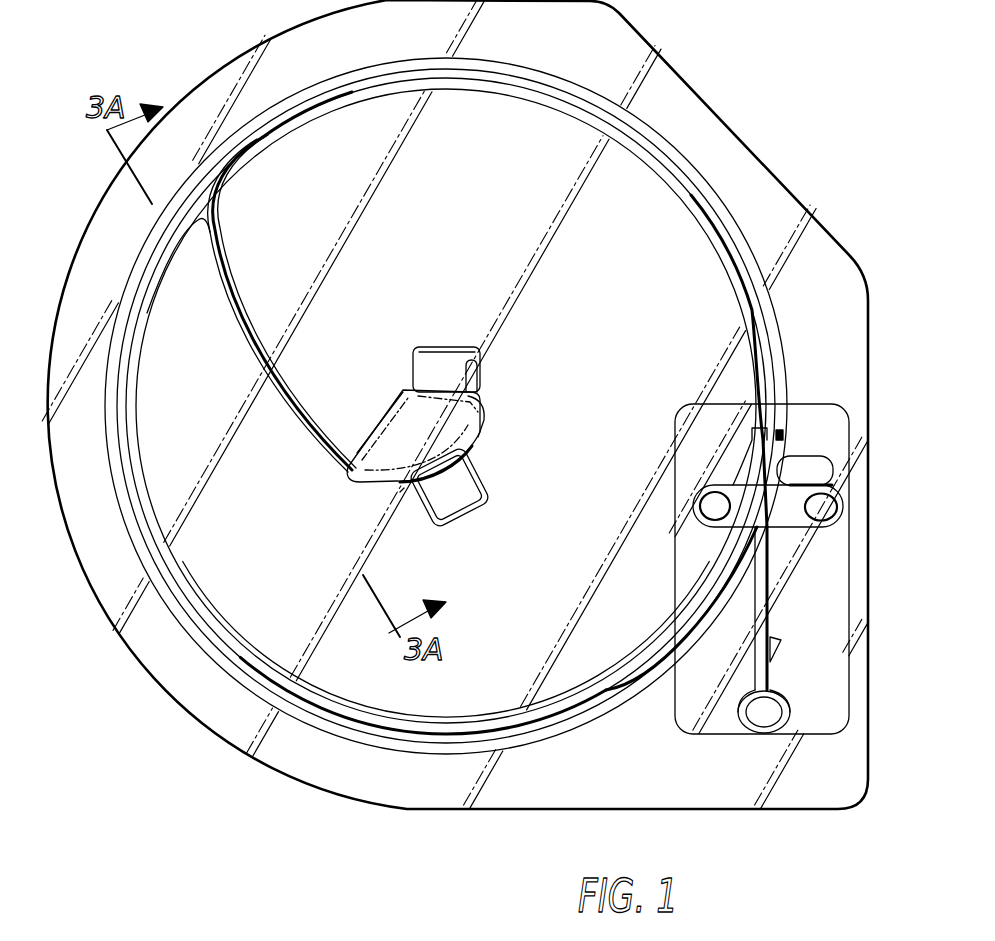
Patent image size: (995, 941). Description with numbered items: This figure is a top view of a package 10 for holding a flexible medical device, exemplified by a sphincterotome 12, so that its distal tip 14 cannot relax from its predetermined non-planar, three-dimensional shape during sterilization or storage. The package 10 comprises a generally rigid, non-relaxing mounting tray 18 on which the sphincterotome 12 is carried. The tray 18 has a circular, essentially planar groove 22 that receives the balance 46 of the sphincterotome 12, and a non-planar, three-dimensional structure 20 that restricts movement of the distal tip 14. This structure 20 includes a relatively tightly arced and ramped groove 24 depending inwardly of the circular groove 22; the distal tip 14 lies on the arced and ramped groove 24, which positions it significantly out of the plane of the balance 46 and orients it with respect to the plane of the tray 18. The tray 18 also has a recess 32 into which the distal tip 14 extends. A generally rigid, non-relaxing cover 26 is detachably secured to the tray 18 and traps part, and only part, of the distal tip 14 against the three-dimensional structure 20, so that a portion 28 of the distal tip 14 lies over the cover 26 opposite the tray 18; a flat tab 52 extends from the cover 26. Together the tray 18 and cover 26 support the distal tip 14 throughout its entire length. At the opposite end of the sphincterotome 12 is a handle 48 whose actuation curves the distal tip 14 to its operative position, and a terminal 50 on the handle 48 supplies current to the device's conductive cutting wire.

The package 10 is at (488, 208).
The sphincterotome 12 is at (687, 619).
The distal tip 14 is at (474, 370).
The mounting tray 18 is at (281, 755).
The non-planar, three-dimensional structure 20 is at (407, 492).
The circular groove 22 is at (215, 638).
The arced and ramped groove 24 is at (228, 237).
The cover 26 is at (392, 398).
The portion of the distal tip 28 is at (466, 442).
The recess 32 is at (430, 360).
The balance of the sphincterotome 46 is at (412, 728).
The handle 48 is at (807, 527).
The terminal 50 is at (849, 404).
The flat tab 52 is at (456, 505).